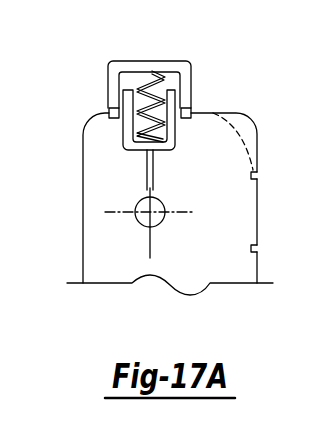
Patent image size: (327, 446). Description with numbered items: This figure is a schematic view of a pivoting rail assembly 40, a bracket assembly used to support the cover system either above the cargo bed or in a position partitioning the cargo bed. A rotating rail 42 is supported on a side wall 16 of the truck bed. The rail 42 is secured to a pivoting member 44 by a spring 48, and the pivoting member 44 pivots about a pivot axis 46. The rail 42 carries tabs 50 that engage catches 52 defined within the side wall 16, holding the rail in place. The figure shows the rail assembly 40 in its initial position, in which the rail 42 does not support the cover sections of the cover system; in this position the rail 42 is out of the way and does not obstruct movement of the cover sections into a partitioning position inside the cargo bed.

The side wall 16 is at (83, 208).
The bracket assembly 40 is at (105, 63).
The rotating rail 42 is at (192, 81).
The pivoting member 44 is at (153, 172).
The pivot axis 46 is at (150, 215).
The spring 48 is at (141, 87).
The tabs 50 is at (110, 118).
The catches 52 is at (116, 119).